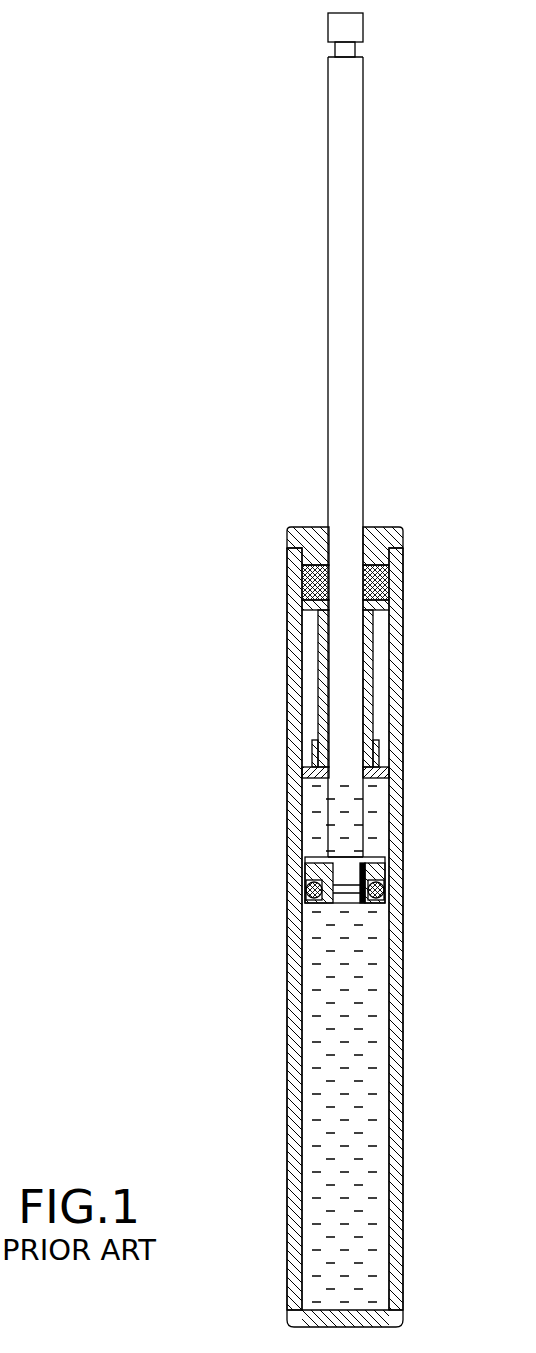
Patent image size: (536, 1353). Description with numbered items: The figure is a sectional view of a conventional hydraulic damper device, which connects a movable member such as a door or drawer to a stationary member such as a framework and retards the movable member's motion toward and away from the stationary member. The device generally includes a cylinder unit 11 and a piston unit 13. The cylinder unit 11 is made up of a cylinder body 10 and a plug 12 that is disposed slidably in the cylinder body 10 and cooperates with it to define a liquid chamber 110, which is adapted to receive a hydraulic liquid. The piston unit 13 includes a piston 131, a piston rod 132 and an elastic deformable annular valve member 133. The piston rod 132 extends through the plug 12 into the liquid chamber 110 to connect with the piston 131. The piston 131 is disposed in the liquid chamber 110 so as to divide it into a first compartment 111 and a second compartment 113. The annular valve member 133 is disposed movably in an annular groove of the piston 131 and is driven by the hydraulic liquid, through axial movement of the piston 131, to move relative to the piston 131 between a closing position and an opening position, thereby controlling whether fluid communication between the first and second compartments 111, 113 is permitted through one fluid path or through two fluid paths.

The cylinder body 10 is at (403, 1050).
The cylinder unit 11 is at (410, 788).
The liquid chamber 110 is at (378, 1118).
The first compartment 111 is at (383, 828).
The second compartment 113 is at (365, 995).
The plug 12 is at (372, 748).
The piston unit 13 is at (380, 425).
The piston 131 is at (310, 872).
The piston rod 132 is at (345, 258).
The annular valve member 133 is at (378, 885).